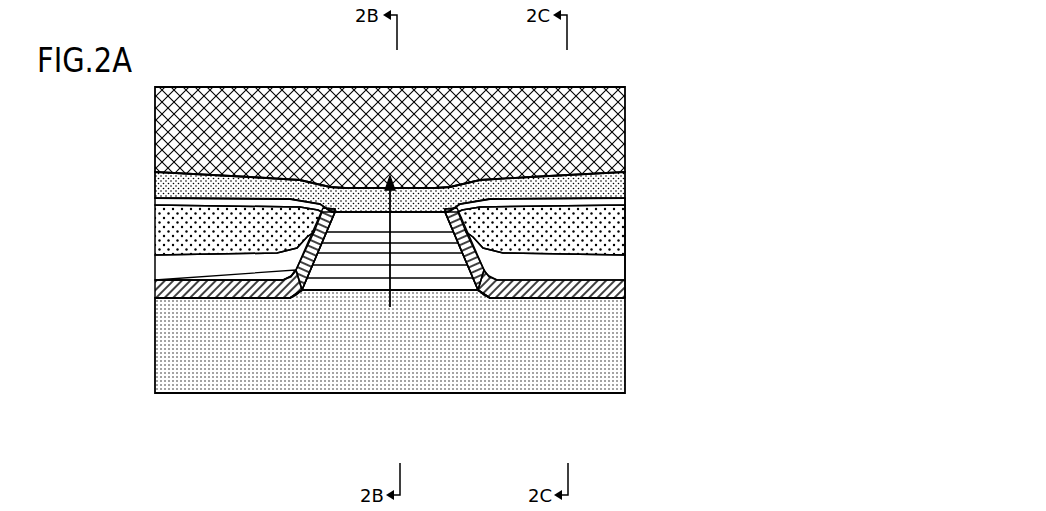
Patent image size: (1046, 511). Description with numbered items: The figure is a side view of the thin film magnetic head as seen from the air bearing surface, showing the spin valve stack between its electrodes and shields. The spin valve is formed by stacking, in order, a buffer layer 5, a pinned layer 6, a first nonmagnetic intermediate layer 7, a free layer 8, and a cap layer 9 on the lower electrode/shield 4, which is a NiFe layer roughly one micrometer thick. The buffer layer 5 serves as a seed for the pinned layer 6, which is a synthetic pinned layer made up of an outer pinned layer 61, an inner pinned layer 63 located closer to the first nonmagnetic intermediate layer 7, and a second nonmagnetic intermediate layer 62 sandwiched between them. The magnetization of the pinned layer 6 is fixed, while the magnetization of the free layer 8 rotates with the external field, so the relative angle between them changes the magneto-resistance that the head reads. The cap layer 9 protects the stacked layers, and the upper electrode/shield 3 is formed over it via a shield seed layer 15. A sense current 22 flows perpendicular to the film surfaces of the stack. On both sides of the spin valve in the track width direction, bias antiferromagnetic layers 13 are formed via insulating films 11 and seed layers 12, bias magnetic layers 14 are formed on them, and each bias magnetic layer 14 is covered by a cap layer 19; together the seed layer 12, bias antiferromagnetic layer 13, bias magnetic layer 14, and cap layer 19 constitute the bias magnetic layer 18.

The upper electrode/shield 3 is at (625, 133).
The shield seed layer 15 is at (625, 183).
The cap layer 19 is at (625, 200).
The bias magnetic layer 14 is at (625, 243).
The bias antiferromagnetic layer 13 is at (625, 271).
The seed layer 12 is at (625, 288).
The insulating film 11 is at (625, 300).
The lower electrode/shield 4 is at (625, 348).
The bias magnetic layer 18 is at (711, 196).
The first nonmagnetic intermediate layer 7 is at (345, 250).
The cap layer 9 is at (377, 222).
The free layer 8 is at (450, 235).
The buffer layer 5 is at (318, 285).
The outer pinned layer 61 is at (340, 260).
The second nonmagnetic intermediate layer 62 is at (350, 267).
The inner pinned layer 63 is at (357, 275).
The pinned layer 6 is at (364, 413).
The sense current 22 is at (390, 300).